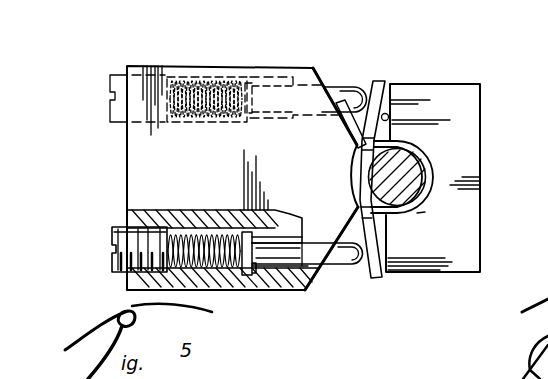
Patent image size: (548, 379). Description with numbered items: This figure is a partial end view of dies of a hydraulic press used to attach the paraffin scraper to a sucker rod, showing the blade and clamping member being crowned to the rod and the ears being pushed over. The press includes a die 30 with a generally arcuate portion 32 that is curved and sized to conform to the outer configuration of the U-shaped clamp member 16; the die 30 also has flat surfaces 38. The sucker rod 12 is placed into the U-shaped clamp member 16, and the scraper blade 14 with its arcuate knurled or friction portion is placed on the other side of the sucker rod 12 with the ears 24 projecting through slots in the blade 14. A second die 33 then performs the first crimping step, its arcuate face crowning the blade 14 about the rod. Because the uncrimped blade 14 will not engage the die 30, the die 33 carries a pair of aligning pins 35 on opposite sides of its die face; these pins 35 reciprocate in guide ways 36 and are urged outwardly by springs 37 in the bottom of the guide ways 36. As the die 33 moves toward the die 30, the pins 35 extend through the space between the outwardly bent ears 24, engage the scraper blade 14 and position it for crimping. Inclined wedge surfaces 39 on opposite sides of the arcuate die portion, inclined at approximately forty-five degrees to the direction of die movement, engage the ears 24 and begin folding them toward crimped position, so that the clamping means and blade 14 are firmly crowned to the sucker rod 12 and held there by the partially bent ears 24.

The sucker rod 12 is at (409, 167).
The scraper blade 14 is at (378, 281).
The U-shaped clamp member 16 is at (421, 214).
The ears 24 is at (342, 128).
The die 30 is at (481, 256).
The arcuate portion 32 is at (429, 201).
The second die 33 is at (166, 175).
The aligning pins 35 is at (352, 87).
The guide ways 36 is at (312, 240).
The springs 37 is at (198, 234).
The flat surfaces 38 is at (389, 119).
The inclined wedge surfaces 39 is at (322, 76).